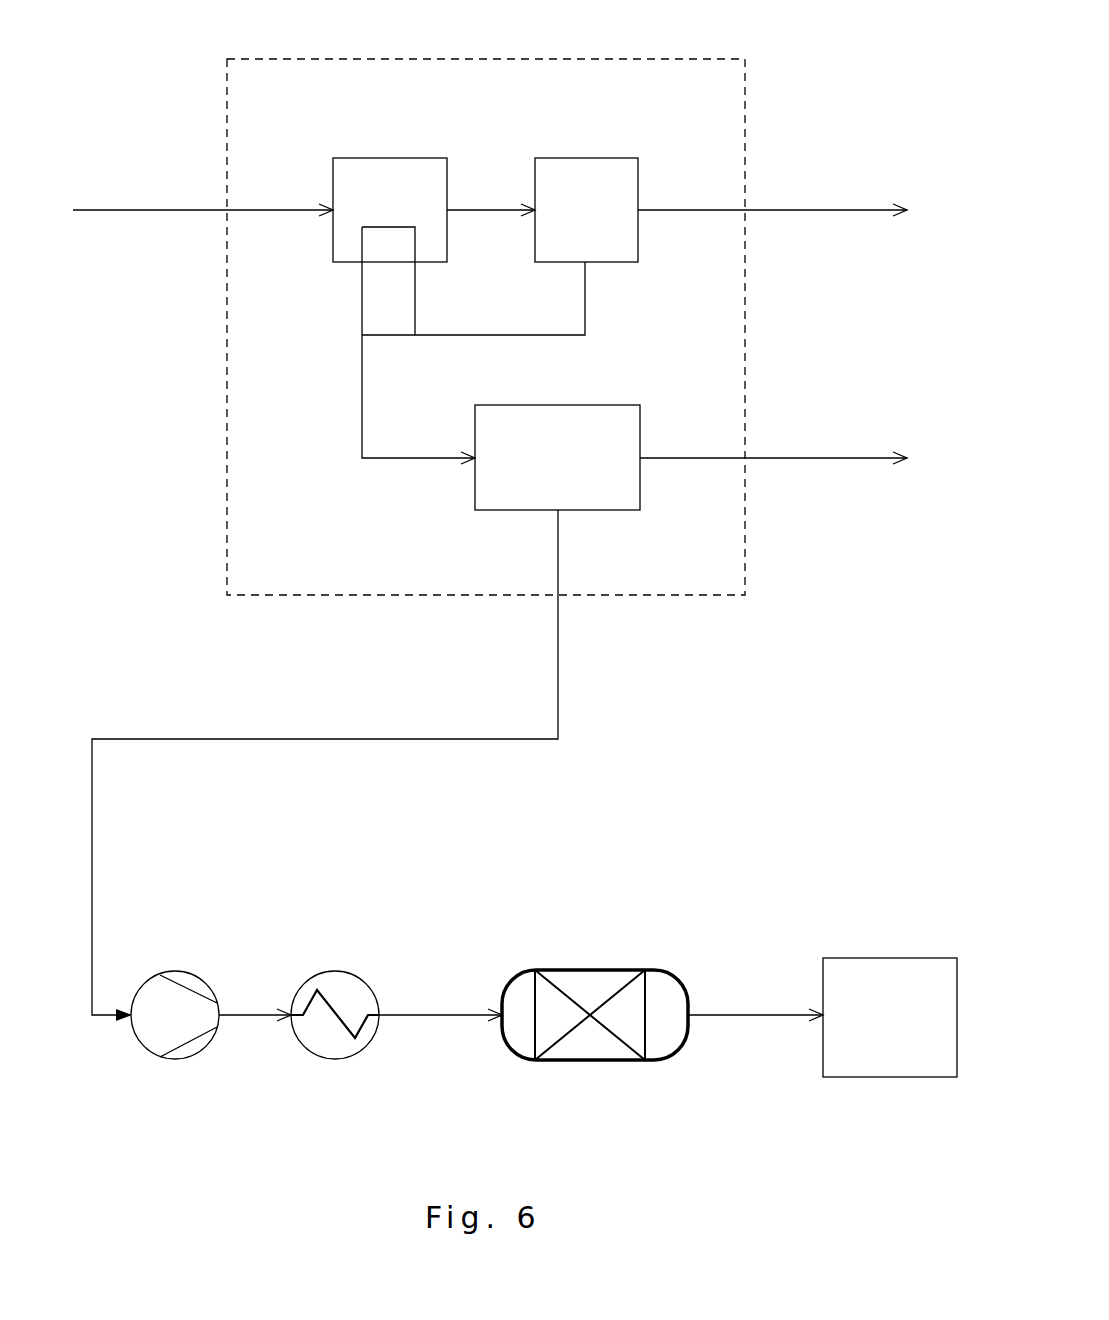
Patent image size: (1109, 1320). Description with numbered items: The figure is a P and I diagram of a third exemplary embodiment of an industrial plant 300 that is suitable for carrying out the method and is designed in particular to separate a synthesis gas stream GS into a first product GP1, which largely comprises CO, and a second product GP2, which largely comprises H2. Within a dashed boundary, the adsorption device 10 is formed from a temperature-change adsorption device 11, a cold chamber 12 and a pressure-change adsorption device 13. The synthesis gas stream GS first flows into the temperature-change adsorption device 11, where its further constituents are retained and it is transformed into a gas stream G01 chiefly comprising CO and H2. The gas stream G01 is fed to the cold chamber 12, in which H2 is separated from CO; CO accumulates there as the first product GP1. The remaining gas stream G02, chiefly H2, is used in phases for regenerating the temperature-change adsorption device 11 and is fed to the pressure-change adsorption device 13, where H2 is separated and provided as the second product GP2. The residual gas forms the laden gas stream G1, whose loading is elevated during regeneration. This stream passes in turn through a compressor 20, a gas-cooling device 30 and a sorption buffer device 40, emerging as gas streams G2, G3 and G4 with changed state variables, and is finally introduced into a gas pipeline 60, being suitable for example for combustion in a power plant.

The industrial plant 300 is at (525, 542).
The adsorption device 10 is at (407, 327).
The temperature-change adsorption device 11 is at (392, 175).
The cold chamber 12 is at (588, 175).
The pressure-change adsorption device 13 is at (568, 423).
The compressor 20 is at (179, 948).
The gas-cooling device 30 is at (339, 948).
The sorption buffer device 40 is at (595, 948).
The gas pipeline 60 is at (890, 957).
The synthesis gas stream GS is at (203, 152).
The gas stream G01 is at (503, 152).
The gas stream G02 is at (470, 403).
The first product GP1 is at (772, 152).
The second product GP2 is at (773, 399).
The laden gas stream G1 is at (325, 765).
The gas stream G2 is at (268, 959).
The gas stream G3 is at (440, 959).
The gas stream G4 is at (755, 959).